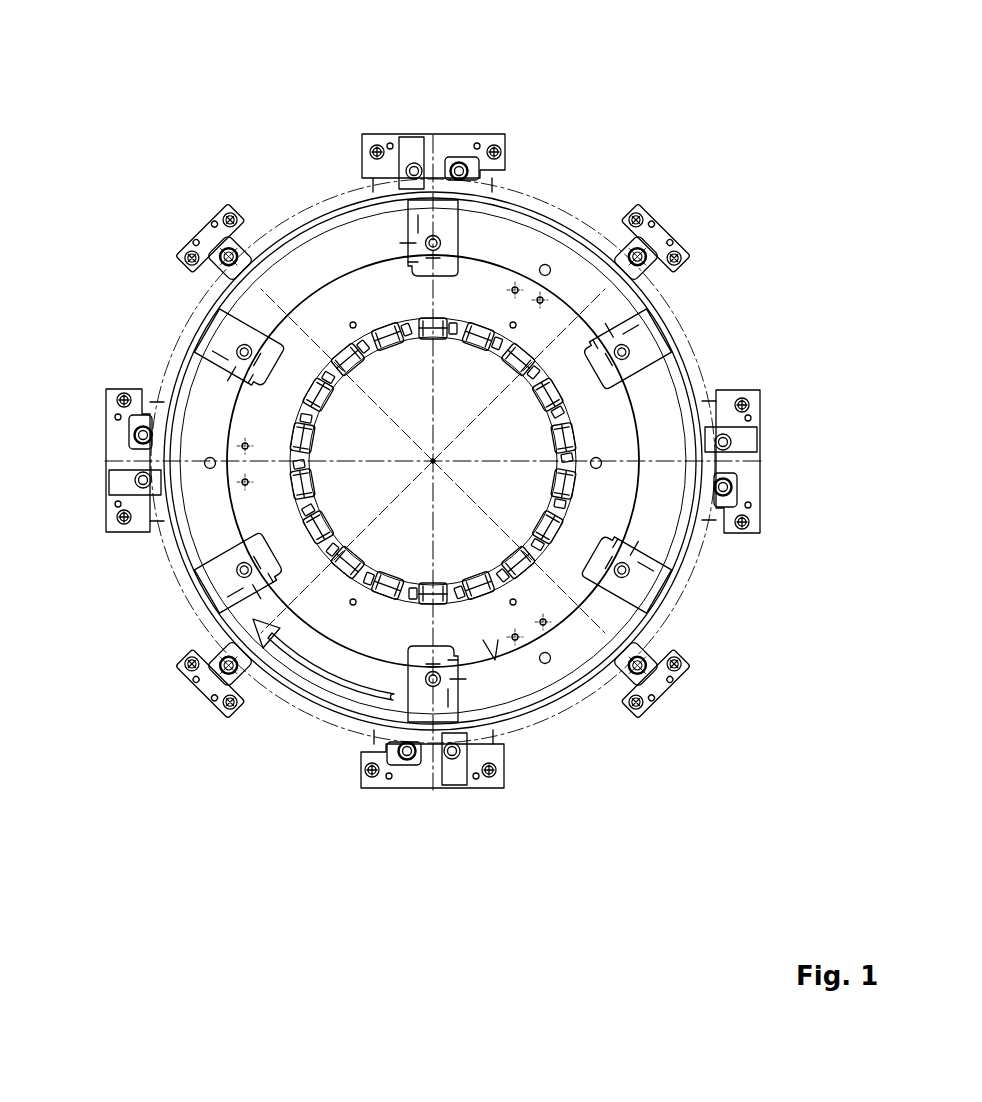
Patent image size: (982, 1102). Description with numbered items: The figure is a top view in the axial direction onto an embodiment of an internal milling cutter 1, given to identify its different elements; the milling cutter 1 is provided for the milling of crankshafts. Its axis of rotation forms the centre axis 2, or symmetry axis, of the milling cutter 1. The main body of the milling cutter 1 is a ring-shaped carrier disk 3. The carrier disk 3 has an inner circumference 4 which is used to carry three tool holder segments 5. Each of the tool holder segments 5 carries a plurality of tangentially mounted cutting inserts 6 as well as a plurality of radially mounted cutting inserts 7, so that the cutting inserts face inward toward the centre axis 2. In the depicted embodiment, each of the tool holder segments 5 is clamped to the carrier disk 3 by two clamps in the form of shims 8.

The milling cutter 1 is at (646, 165).
The centre axis 2 is at (436, 461).
The carrier disk 3 is at (325, 258).
The inner circumference 4 is at (498, 645).
The tool holder segments 5 is at (473, 302).
The tangentially mounted cutting inserts 6 is at (405, 473).
The radially mounted cutting inserts 7 is at (404, 322).
The shims 8 is at (443, 220).